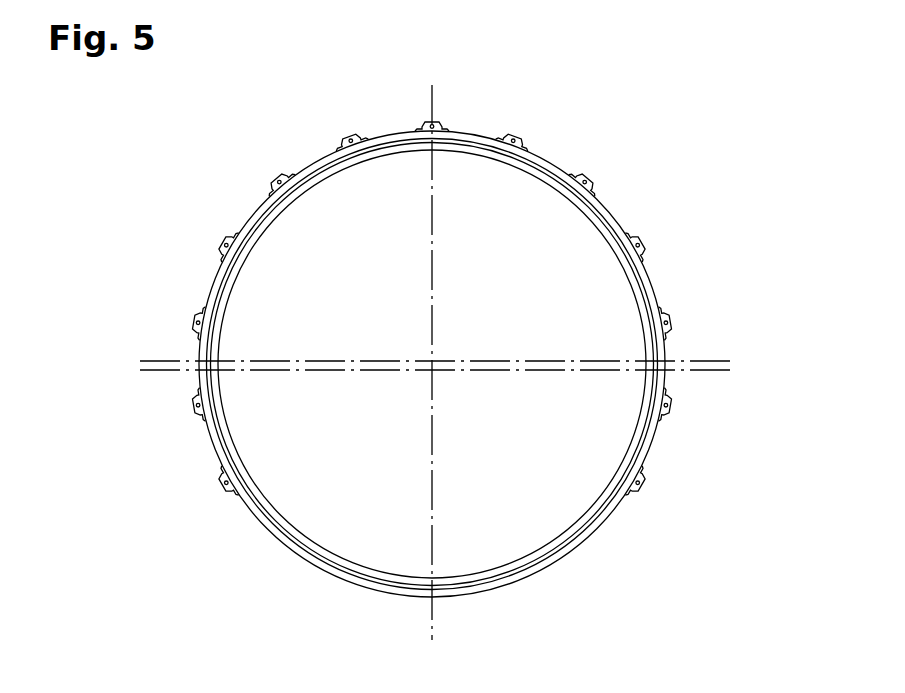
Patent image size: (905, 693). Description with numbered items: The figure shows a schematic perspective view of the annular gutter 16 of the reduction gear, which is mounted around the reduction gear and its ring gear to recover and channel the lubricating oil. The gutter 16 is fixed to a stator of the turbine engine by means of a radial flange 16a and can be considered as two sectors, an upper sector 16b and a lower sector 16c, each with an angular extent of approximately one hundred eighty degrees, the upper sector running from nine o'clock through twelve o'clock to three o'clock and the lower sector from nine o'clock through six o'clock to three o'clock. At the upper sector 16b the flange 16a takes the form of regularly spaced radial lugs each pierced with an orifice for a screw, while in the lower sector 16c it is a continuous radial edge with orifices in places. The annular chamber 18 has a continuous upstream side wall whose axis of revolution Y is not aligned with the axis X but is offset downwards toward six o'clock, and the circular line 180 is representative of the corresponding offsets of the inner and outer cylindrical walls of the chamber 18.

The annular gutter 16 is at (185, 180).
The radial flange 16a is at (428, 121).
The upper sector 16b is at (764, 120).
The lower sector 16c is at (764, 367).
The chamber 18 is at (323, 172).
The circular line 180 is at (215, 421).
The axis X is at (432, 362).
The axis of revolution Y is at (432, 368).